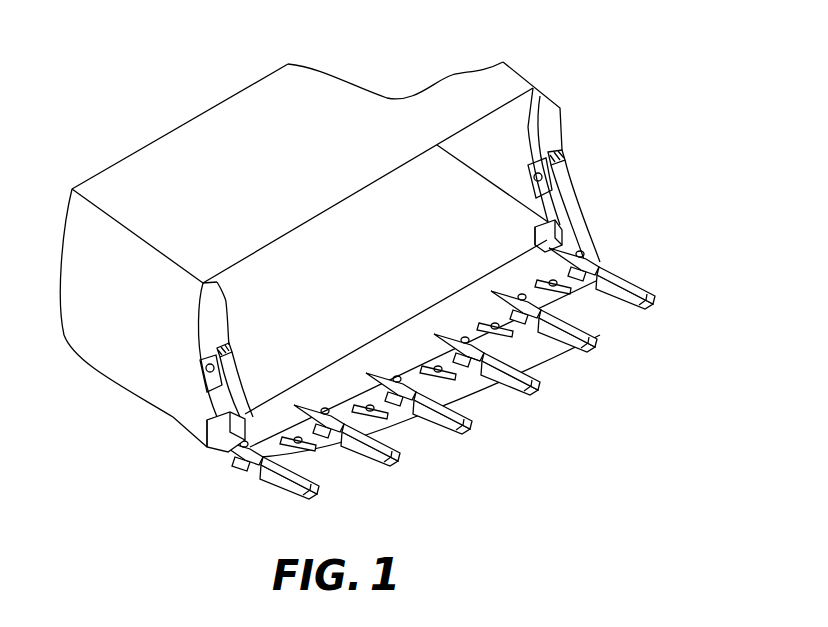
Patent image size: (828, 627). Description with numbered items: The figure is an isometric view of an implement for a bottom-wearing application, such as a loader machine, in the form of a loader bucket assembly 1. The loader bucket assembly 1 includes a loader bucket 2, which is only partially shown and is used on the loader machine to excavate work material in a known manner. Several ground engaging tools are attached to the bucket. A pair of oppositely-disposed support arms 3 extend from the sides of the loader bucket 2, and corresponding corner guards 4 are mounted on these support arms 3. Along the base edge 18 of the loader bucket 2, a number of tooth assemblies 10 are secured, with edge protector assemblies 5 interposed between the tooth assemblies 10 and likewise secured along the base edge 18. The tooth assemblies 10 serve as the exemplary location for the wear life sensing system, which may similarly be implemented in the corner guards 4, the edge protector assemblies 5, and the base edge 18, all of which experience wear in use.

The loader bucket assembly 1 is at (178, 50).
The loader bucket 2 is at (120, 382).
The support arms 3 is at (212, 312).
The corner guards 4 is at (243, 457).
The edge protector assemblies 5 is at (522, 343).
The tooth assemblies 10 is at (318, 491).
The base edge 18 is at (402, 347).